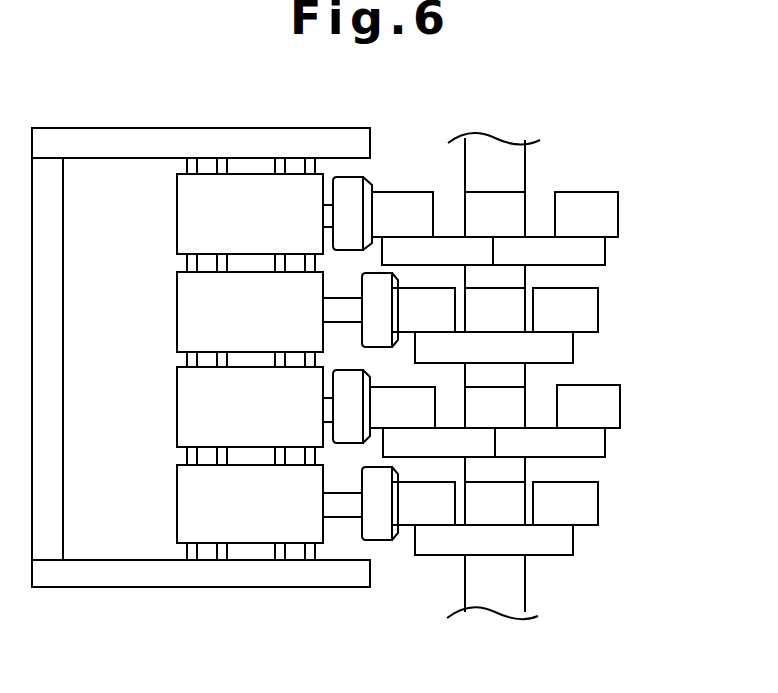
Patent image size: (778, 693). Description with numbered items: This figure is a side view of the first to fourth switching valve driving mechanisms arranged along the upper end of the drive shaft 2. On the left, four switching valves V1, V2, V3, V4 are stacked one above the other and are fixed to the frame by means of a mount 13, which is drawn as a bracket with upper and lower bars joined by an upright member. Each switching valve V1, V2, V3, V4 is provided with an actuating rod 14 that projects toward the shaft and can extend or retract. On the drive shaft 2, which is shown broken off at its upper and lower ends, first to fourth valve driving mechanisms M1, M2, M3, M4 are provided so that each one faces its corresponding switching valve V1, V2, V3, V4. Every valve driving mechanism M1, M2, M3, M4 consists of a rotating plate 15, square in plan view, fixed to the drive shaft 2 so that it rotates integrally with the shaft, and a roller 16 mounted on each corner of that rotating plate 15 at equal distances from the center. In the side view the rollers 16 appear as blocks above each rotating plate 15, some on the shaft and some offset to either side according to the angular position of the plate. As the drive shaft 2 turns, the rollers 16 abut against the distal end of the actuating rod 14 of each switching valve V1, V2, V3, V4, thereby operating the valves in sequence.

The drive shaft 2 is at (525, 590).
The mount 13 is at (192, 587).
The actuating rod 14 is at (328, 204).
The rotating plate 15 is at (605, 248).
The roller 16 is at (410, 203).
The first switching valve V1 is at (178, 232).
The second switching valve V2 is at (177, 327).
The third switching valve V3 is at (177, 422).
The fourth switching valve V4 is at (177, 520).
The first valve driving mechanism M1 is at (633, 205).
The second valve driving mechanism M2 is at (620, 318).
The third valve driving mechanism M3 is at (630, 378).
The fourth valve driving mechanism M4 is at (613, 478).